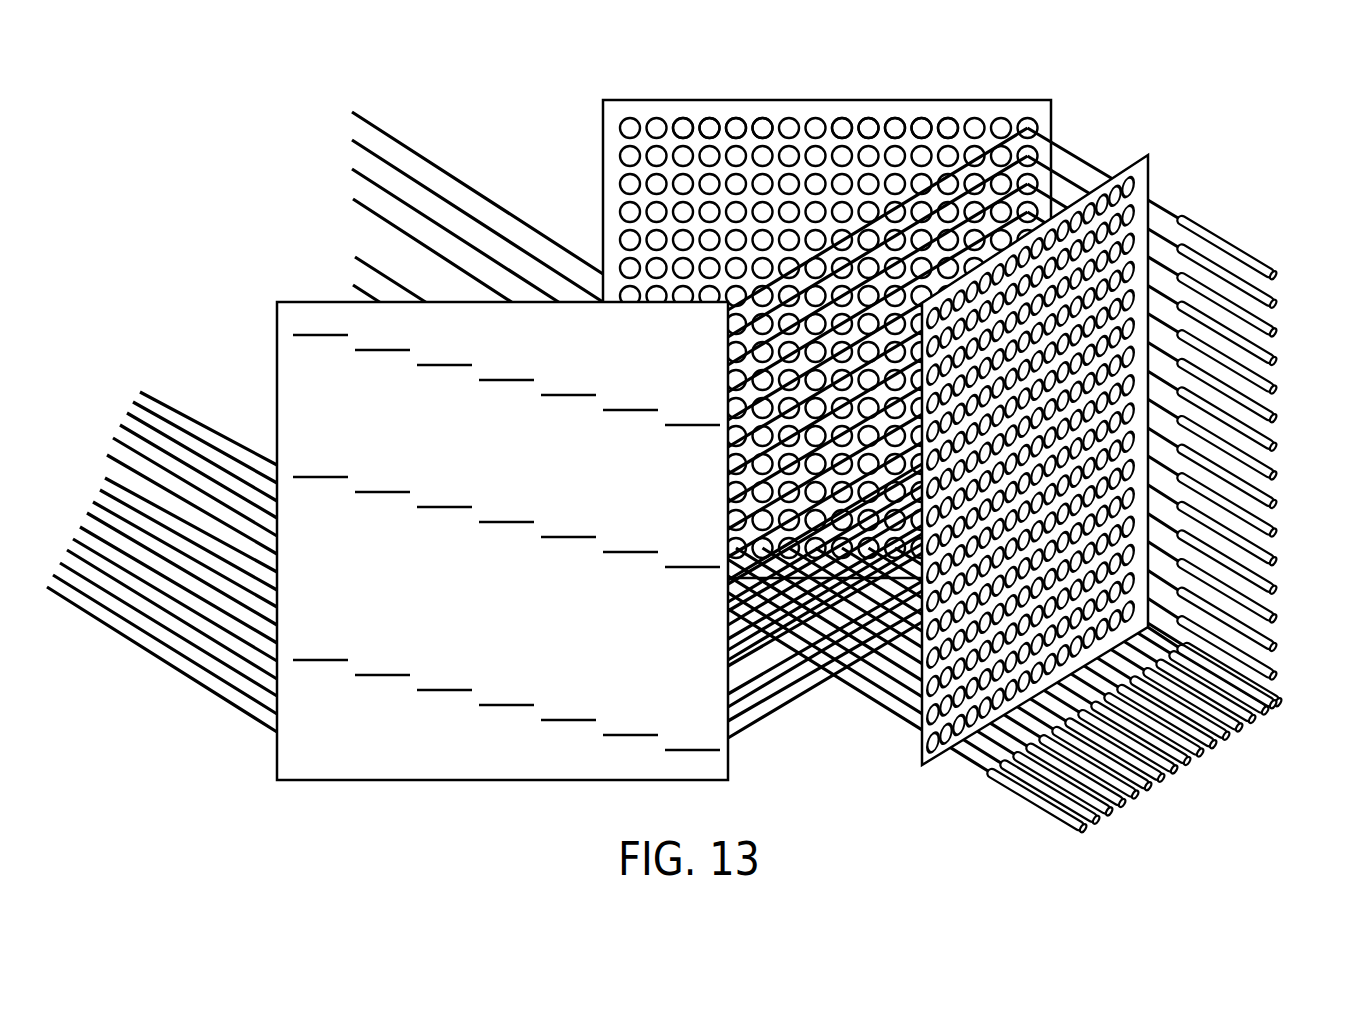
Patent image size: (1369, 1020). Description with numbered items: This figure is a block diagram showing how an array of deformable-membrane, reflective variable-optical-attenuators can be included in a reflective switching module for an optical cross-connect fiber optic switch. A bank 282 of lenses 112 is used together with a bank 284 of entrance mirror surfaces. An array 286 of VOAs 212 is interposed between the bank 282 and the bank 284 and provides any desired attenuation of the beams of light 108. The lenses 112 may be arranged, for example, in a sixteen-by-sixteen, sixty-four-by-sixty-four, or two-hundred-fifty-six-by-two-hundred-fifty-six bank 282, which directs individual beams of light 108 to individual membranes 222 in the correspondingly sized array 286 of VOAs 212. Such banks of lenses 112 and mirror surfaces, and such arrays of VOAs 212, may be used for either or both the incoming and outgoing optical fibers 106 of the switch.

The optical fibers 106 is at (1275, 367).
The beams of light 108 is at (353, 199).
The lenses 112 is at (935, 738).
The VOAs 212 is at (763, 114).
The membranes 222 is at (949, 114).
The bank of lenses 282 is at (1148, 172).
The bank of entrance mirror surfaces 284 is at (517, 591).
The array of VOAs 286 is at (605, 128).